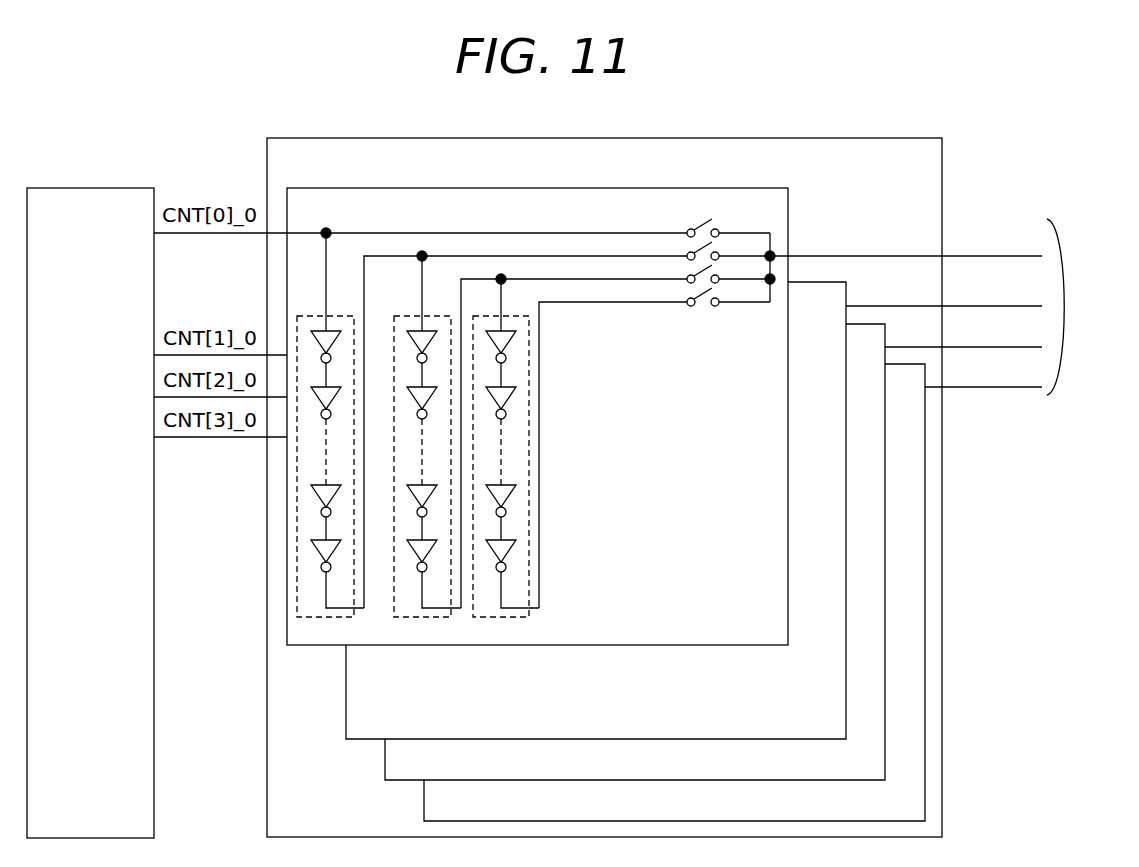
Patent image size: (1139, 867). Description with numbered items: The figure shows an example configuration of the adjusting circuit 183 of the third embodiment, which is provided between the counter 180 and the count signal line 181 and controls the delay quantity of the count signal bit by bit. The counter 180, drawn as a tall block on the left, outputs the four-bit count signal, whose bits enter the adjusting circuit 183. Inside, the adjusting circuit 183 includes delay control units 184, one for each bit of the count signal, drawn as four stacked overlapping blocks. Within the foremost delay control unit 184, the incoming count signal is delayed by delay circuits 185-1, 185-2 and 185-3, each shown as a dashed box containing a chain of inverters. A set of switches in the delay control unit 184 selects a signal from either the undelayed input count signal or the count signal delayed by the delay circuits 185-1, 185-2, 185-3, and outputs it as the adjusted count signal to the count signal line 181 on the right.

The counter 180 is at (100, 188).
The count signal line 181 is at (943, 307).
The adjusting circuit 183 is at (835, 138).
The delay control unit 184 is at (716, 188).
The delay circuit 185-1 is at (313, 619).
The delay circuit 185-2 is at (426, 619).
The delay circuit 185-3 is at (531, 573).